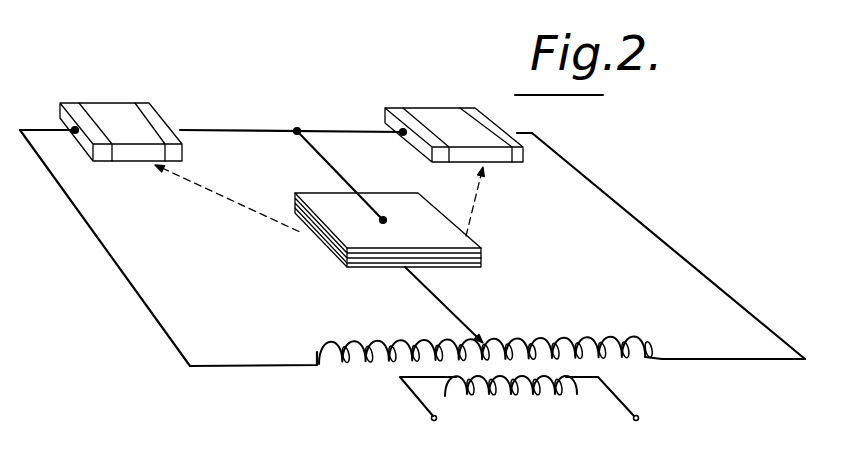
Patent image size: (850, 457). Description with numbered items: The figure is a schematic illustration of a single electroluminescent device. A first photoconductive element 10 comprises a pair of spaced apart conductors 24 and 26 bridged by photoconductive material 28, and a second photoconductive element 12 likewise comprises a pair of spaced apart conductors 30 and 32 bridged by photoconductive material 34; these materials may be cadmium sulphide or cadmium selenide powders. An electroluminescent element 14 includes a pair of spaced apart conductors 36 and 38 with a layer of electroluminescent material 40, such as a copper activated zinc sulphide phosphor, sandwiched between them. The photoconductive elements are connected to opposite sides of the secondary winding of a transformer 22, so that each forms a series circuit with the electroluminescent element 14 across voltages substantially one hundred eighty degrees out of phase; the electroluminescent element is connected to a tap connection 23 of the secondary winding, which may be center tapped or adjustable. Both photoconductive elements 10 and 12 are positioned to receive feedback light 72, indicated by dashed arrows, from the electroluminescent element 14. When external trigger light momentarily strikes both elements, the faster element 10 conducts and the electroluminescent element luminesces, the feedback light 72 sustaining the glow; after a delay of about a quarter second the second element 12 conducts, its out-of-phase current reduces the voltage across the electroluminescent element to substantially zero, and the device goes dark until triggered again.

The first photoconductive element 10 is at (126, 131).
The second photoconductive element 12 is at (474, 138).
The electroluminescent element 14 is at (311, 158).
The transformer 22 is at (392, 372).
The tap connection 23 is at (444, 312).
The conductor 24 is at (103, 153).
The conductor 26 is at (160, 125).
The photoconductive material 28 is at (122, 115).
The conductor 30 is at (440, 158).
The conductor 32 is at (518, 136).
The photoconductive material 34 is at (427, 112).
The conductor 36 is at (428, 221).
The conductor 38 is at (470, 267).
The electroluminescent material 40 is at (481, 256).
The feedback light 72 is at (238, 205).